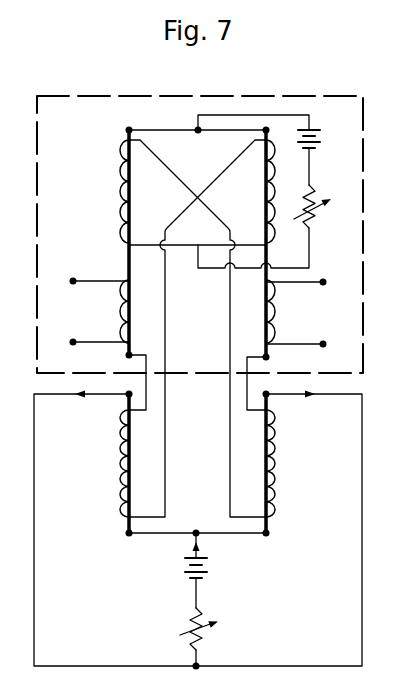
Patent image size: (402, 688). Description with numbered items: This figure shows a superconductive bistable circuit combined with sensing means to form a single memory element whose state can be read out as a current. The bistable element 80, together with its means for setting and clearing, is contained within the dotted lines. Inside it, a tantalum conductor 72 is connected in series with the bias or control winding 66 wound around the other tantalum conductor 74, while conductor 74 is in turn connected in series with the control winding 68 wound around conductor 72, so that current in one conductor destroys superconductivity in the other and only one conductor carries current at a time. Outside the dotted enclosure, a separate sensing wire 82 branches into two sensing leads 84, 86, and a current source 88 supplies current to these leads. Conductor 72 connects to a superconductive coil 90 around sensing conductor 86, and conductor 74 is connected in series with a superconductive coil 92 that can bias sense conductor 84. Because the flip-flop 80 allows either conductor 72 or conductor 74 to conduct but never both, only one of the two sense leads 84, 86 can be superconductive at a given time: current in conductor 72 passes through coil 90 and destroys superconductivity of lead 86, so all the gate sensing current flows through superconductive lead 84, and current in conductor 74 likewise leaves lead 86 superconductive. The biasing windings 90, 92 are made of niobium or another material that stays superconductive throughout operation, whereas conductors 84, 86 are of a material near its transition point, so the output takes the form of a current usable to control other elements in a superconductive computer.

The bistable element 80 is at (70, 121).
The control winding 66 is at (121, 190).
The control winding 68 is at (270, 150).
The conductor 74 is at (128, 266).
The conductor 72 is at (268, 256).
The superconductive coil 92 is at (124, 412).
The superconductive coil 90 is at (272, 412).
The sensing lead 84 is at (125, 525).
The sensing lead 86 is at (270, 525).
The sensing wire 82 is at (202, 553).
The current source 88 is at (190, 606).